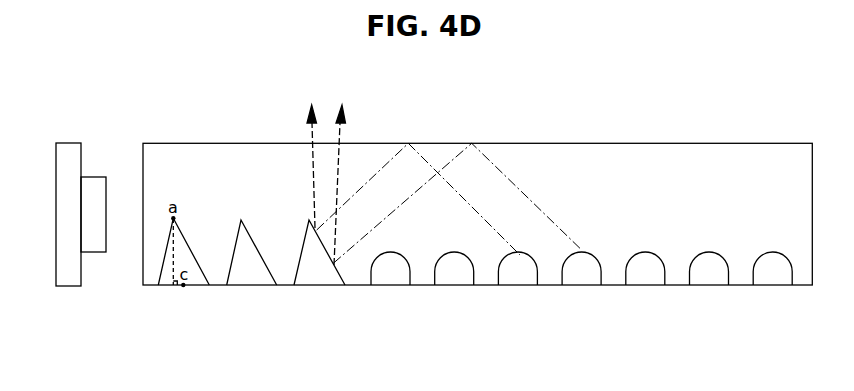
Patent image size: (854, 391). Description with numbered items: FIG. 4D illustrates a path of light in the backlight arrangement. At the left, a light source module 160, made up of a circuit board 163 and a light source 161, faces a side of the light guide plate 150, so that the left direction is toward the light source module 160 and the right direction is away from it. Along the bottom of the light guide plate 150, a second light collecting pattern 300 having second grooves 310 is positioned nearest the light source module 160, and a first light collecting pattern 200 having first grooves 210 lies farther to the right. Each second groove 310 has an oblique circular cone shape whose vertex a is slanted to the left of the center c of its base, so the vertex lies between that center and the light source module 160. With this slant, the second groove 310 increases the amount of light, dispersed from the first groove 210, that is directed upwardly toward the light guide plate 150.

The light guide plate 150 is at (640, 188).
The light source module 160 is at (43, 330).
The light source 161 is at (94, 247).
The circuit board 163 is at (63, 251).
The first light collecting pattern 200 is at (585, 221).
The first groove 210 is at (710, 194).
The second light collecting pattern 300 is at (250, 217).
The second groove 310 is at (250, 260).